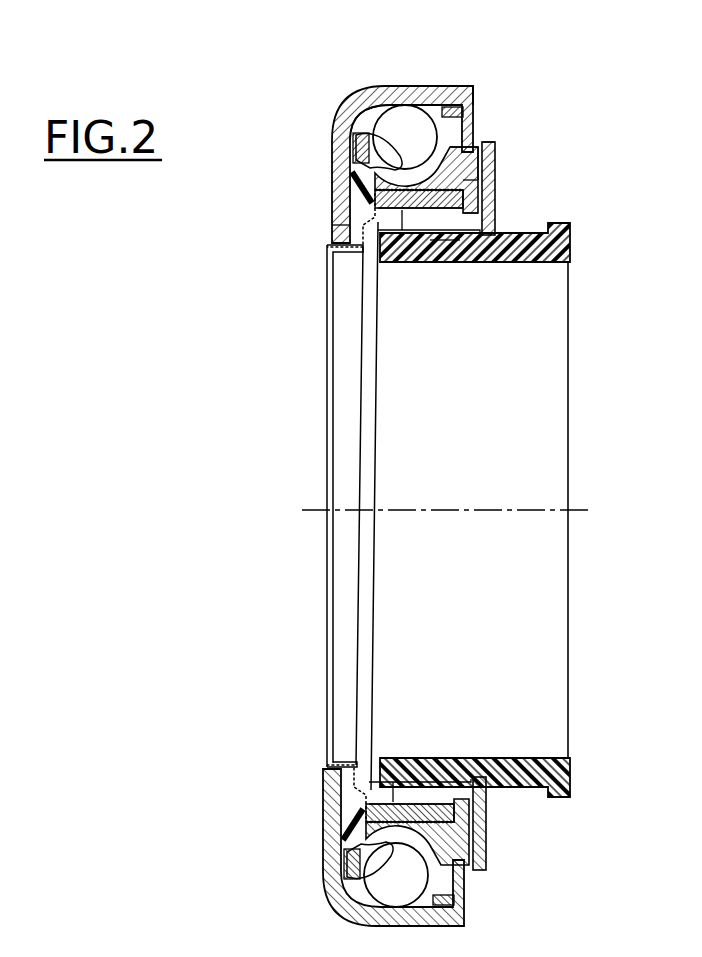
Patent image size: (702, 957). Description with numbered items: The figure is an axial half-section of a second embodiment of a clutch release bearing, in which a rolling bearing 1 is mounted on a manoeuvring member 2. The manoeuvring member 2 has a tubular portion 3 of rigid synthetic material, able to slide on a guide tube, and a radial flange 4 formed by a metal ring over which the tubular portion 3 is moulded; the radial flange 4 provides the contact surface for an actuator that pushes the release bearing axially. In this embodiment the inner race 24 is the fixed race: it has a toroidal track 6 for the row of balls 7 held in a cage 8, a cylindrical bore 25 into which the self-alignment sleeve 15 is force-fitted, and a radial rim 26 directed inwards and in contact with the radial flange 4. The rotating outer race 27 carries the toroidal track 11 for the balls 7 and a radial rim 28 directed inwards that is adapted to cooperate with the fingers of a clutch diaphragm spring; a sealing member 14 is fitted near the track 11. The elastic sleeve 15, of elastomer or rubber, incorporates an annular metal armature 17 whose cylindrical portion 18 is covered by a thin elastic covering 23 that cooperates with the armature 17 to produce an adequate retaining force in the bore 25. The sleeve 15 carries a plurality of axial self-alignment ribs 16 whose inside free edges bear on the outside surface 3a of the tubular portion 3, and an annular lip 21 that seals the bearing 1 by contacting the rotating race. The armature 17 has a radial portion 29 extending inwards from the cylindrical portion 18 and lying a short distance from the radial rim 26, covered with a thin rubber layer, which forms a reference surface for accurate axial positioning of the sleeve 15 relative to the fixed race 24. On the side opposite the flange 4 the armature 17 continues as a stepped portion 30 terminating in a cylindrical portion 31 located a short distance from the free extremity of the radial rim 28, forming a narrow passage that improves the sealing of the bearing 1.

The rolling bearing 1 is at (472, 86).
The manoeuvring member 2 is at (574, 243).
The tubular portion 3 is at (570, 262).
The outside surface 3a is at (445, 250).
The radial flange 4 is at (474, 125).
The toroidal track 6 is at (400, 162).
The balls 7 is at (405, 135).
The cage 8 is at (365, 135).
The toroidal track 11 is at (390, 110).
The sealing member 14 is at (490, 142).
The self-alignment sleeve 15 is at (480, 210).
The self-alignment ribs 16 is at (470, 228).
The annular metal armature 17 is at (435, 222).
The cylindrical portion 18 is at (437, 217).
The annular lip 21 is at (368, 178).
The elastic covering 23 is at (395, 195).
The inner race 24 is at (450, 107).
The cylindrical bore 25 is at (395, 205).
The radial rim 26 is at (478, 165).
The outer race 27 is at (372, 100).
The radial rim 28 is at (340, 228).
The radial portion 29 is at (496, 195).
The stepped portion 30 is at (336, 240).
The cylindrical portion 31 is at (352, 310).